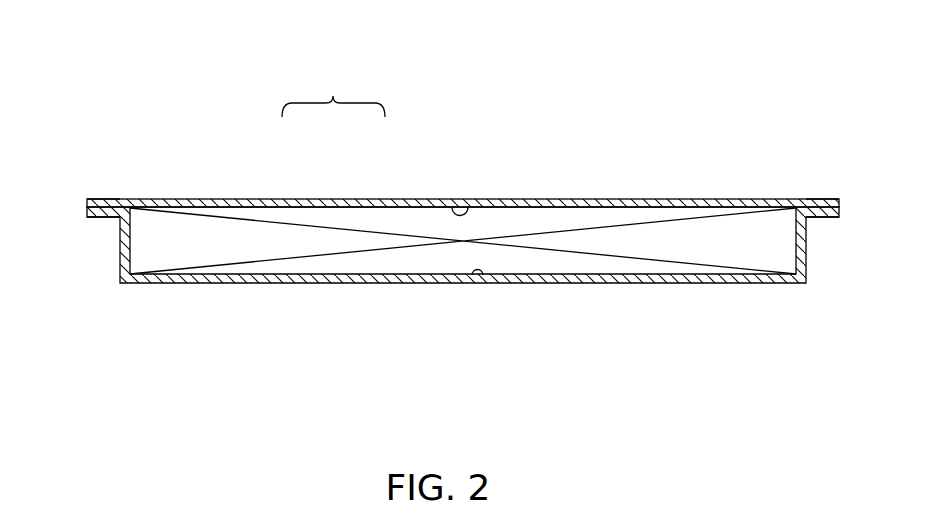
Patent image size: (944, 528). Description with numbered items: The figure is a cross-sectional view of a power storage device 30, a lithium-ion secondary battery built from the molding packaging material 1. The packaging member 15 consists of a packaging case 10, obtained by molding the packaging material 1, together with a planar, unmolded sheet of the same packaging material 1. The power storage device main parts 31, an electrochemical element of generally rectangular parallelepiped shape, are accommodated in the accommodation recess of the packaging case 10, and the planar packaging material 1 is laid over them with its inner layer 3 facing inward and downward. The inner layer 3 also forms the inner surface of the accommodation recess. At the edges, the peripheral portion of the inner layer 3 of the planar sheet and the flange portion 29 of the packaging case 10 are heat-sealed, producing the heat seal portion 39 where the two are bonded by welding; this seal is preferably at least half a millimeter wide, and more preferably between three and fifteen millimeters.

The power storage device 30 is at (693, 94).
The packaging material 1 is at (377, 199).
The packaging case 10 is at (315, 284).
The packaging member 15 is at (333, 88).
The inner layer 3 is at (468, 207).
The power storage device main parts 31 is at (578, 240).
The heat seal portion 39 is at (110, 200).
The flange portion 29 is at (95, 217).